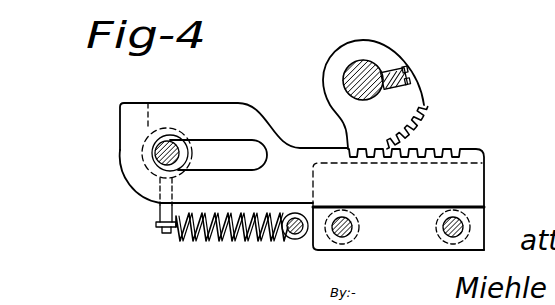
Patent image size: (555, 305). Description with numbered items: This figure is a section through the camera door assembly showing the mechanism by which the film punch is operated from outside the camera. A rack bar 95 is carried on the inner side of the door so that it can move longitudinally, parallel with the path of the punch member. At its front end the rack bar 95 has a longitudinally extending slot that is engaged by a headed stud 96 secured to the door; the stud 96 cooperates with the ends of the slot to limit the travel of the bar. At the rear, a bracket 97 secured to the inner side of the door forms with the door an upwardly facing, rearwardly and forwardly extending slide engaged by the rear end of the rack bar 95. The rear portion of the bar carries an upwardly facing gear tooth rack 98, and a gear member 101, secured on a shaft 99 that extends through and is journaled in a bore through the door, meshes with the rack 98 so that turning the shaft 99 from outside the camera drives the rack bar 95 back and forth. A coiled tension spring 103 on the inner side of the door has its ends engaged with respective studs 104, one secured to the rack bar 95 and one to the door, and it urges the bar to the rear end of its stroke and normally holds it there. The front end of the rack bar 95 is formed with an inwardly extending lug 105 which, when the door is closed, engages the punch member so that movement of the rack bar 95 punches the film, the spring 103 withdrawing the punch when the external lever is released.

The rack bar 95 is at (262, 122).
The headed stud 96 is at (156, 152).
The bracket 97 is at (477, 222).
The gear tooth rack 98 is at (450, 150).
The shaft 99 is at (356, 73).
The gear member 101 is at (400, 97).
The coiled tension spring 103 is at (207, 236).
The studs 104 is at (160, 213).
The lug 105 is at (142, 143).